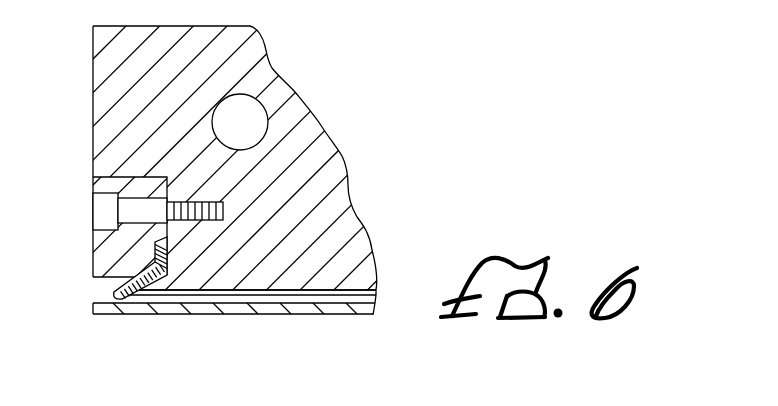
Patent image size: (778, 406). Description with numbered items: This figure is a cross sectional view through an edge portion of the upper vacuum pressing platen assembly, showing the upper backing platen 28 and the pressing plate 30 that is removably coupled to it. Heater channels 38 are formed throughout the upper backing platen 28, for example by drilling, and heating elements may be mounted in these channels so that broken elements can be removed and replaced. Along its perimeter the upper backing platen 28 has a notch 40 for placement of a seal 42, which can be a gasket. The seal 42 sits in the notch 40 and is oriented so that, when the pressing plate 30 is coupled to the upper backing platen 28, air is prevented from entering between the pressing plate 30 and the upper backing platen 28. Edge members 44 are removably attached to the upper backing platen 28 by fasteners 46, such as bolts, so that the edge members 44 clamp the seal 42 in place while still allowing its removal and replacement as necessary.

The upper backing platen 28 is at (248, 27).
The pressing plate 30 is at (282, 315).
The heater channels 38 is at (245, 115).
The notch 40 is at (133, 178).
The seal 42 is at (113, 295).
The edge members 44 is at (94, 262).
The fasteners 46 is at (102, 210).